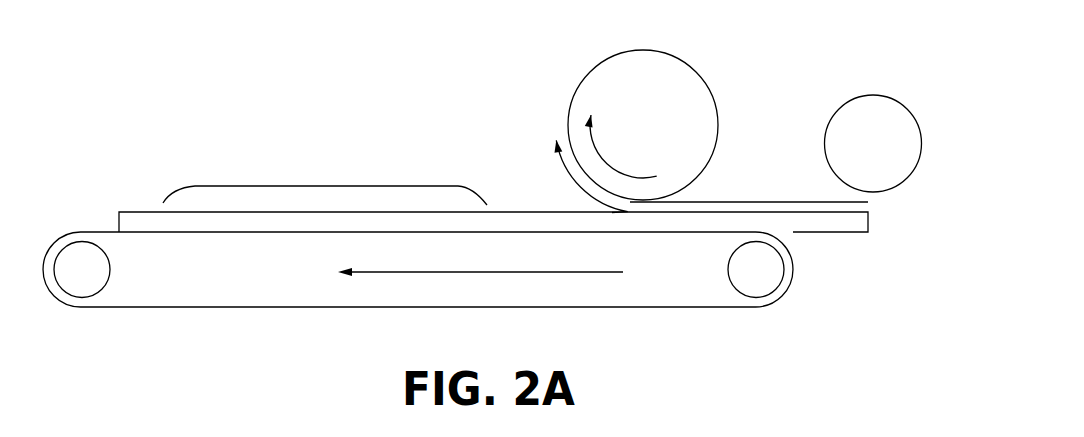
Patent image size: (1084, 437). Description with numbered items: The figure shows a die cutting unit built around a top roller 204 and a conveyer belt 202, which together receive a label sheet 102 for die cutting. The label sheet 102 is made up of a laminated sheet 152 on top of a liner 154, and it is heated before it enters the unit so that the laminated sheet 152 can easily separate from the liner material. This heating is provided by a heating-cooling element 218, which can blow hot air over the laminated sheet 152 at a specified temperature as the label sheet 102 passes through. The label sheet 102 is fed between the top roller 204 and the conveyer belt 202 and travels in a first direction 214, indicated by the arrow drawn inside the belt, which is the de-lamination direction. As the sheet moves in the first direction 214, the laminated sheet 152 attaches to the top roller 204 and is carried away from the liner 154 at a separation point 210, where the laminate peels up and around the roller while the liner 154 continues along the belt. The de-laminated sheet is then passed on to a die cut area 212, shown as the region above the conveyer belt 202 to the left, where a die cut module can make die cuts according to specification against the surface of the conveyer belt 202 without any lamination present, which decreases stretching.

The label sheet 102 is at (818, 235).
The laminated sheet 152 is at (705, 195).
The liner 154 is at (143, 213).
The conveyer belt 202 is at (196, 313).
The top roller 204 is at (662, 102).
The separation point 210 is at (558, 198).
The die cut area 212 is at (325, 185).
The first direction 214 is at (592, 273).
The heating-cooling element 218 is at (860, 93).